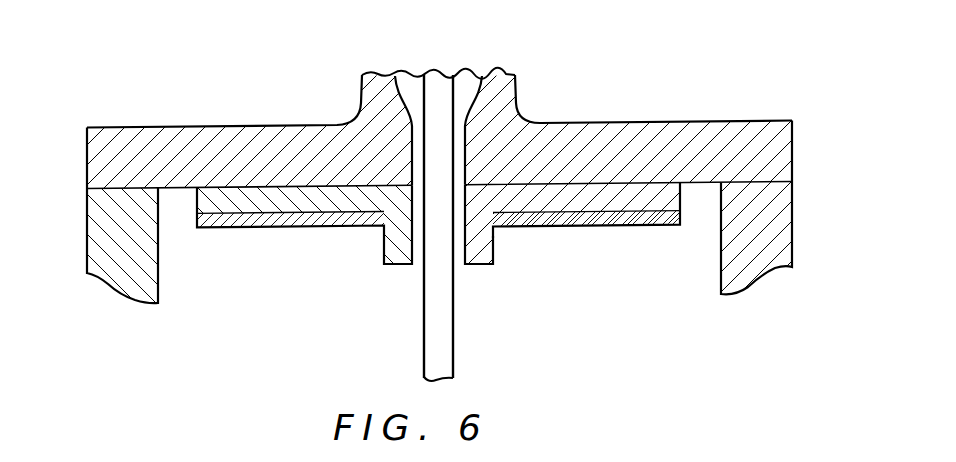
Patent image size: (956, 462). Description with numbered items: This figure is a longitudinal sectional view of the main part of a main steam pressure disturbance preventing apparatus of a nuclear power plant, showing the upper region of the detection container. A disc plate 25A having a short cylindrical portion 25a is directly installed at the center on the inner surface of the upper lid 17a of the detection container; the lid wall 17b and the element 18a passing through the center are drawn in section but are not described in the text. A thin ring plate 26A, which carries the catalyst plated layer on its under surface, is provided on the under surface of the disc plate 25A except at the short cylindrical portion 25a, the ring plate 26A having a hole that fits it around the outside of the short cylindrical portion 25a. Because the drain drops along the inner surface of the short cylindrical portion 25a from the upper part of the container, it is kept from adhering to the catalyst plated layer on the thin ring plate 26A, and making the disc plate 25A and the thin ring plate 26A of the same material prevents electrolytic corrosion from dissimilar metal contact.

The upper lid 17a is at (780, 217).
The top wall of housing 17b is at (663, 128).
The pin 18a is at (438, 87).
The disc plate 25A is at (592, 202).
The short cylindrical portion 25a is at (483, 258).
The thin ring plate 26A is at (247, 229).